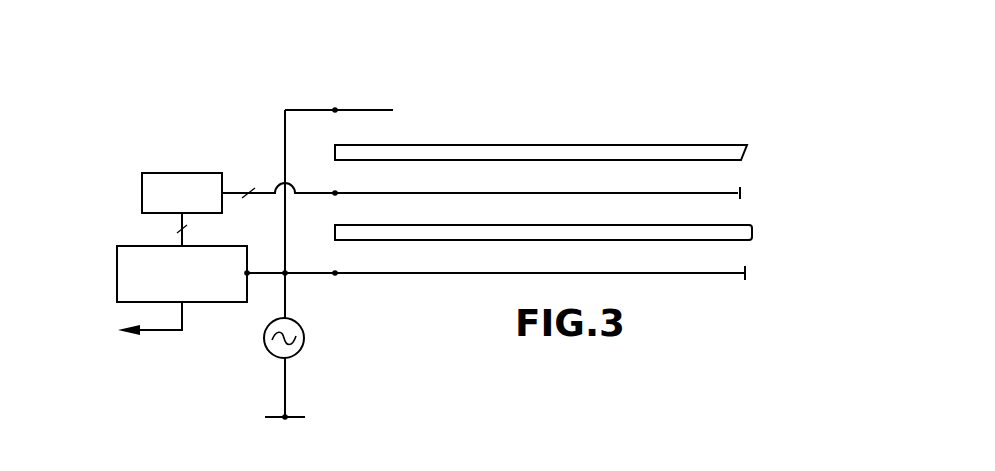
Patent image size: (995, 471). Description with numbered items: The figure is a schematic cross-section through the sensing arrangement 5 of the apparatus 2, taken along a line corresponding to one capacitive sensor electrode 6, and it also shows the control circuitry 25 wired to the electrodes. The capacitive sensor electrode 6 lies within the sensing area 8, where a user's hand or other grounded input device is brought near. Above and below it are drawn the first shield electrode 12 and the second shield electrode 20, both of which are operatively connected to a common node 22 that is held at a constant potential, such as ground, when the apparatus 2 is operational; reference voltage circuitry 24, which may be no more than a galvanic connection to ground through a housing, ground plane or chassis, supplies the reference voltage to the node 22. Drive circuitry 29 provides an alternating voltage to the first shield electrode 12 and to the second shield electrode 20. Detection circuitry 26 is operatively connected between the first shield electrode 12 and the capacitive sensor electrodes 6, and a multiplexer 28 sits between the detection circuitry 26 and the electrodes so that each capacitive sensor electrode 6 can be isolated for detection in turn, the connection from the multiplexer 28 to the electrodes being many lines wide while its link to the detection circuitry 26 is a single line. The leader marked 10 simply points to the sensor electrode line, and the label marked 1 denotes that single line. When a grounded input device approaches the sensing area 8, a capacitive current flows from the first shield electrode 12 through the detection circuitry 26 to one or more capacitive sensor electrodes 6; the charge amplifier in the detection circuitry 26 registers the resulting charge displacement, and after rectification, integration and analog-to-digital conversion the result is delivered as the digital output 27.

The apparatus 2 is at (235, 75).
The sensing arrangement 5 is at (777, 130).
The capacitive sensor electrode 6 is at (543, 192).
The sensing area 8 is at (580, 118).
The sense line 10 is at (408, 192).
The first shield electrode 12 is at (375, 110).
The second shield electrode 20 is at (403, 273).
The node 22 is at (287, 414).
The reference voltage circuitry 24 is at (265, 418).
The control circuitry 25 is at (67, 225).
The detection circuitry 26 is at (117, 275).
The digital output 27 is at (167, 332).
The multiplexer 28 is at (142, 186).
The drive circuitry 29 is at (303, 326).
The single line bus 1 is at (171, 229).